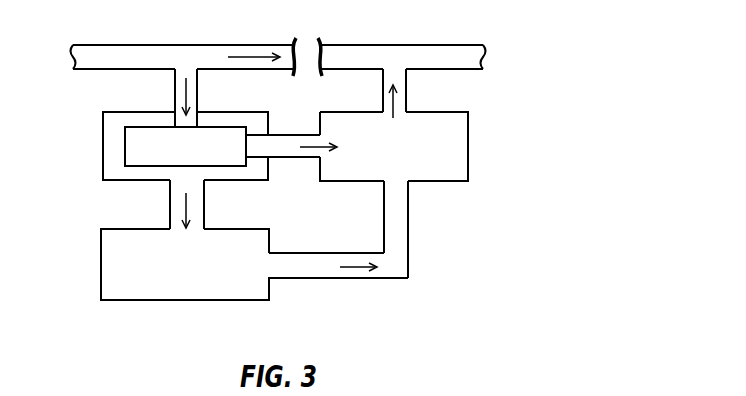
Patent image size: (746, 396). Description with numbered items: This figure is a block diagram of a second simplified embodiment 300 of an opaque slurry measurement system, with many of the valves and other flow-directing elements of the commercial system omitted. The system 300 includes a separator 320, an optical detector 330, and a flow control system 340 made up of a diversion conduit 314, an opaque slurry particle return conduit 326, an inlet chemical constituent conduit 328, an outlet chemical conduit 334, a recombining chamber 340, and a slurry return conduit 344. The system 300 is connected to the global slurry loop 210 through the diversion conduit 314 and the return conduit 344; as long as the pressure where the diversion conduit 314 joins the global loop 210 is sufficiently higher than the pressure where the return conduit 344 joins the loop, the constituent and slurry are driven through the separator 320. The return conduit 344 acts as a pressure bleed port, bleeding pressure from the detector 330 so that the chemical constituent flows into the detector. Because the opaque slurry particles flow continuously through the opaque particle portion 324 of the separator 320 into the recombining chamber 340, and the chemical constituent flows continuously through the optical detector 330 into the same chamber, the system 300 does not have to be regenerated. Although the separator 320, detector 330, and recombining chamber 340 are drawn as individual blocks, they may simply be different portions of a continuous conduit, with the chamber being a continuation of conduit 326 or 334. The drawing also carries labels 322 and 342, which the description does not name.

The global slurry loop 210 is at (357, 45).
The simplified embodiment of the system 300 is at (425, 300).
The diversion conduit 314 is at (198, 82).
The separator 320 is at (80, 161).
The housing 322 is at (103, 174).
The opaque particle portion 324 is at (141, 127).
The opaque slurry particle return conduit 326 is at (295, 135).
The inlet chemical constituent conduit 328 is at (204, 200).
The optical detector 330 is at (132, 301).
The outlet chemical conduit 334 is at (408, 227).
The recombining chamber 340 is at (333, 300).
The junction chamber 342 is at (467, 157).
The slurry return conduit 344 is at (408, 85).